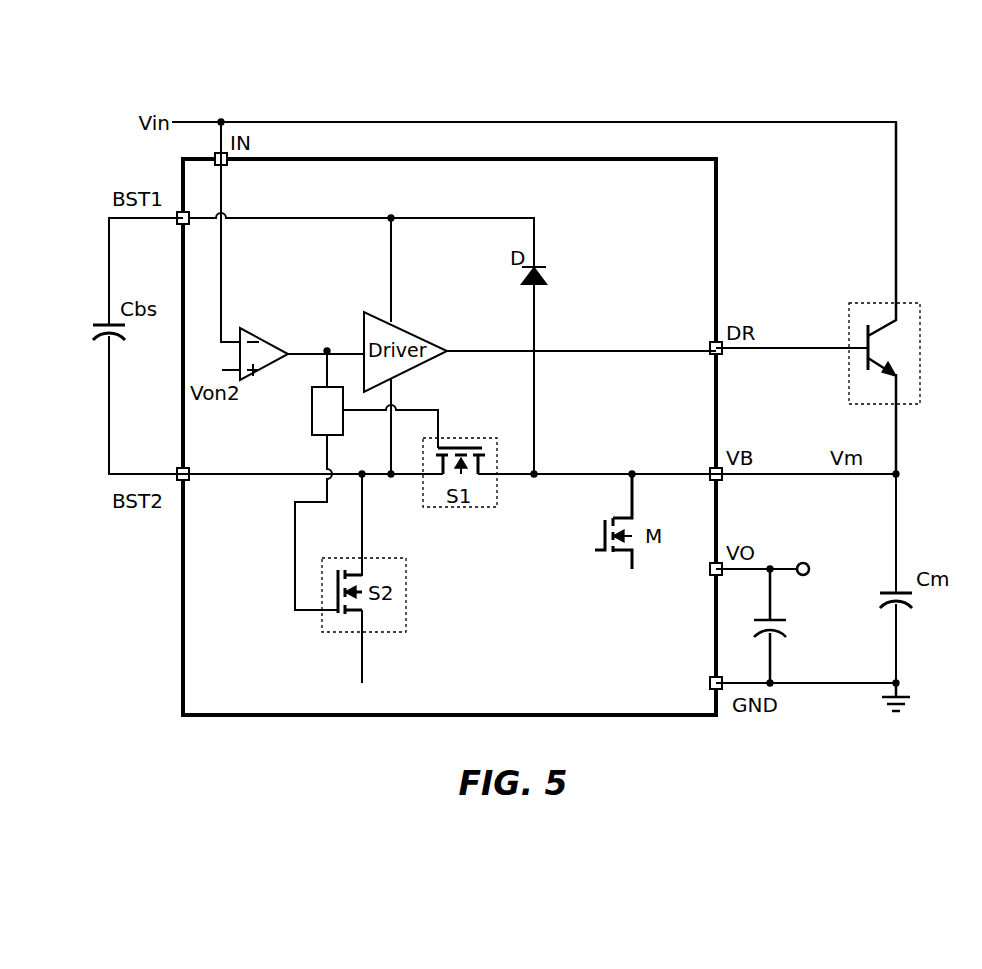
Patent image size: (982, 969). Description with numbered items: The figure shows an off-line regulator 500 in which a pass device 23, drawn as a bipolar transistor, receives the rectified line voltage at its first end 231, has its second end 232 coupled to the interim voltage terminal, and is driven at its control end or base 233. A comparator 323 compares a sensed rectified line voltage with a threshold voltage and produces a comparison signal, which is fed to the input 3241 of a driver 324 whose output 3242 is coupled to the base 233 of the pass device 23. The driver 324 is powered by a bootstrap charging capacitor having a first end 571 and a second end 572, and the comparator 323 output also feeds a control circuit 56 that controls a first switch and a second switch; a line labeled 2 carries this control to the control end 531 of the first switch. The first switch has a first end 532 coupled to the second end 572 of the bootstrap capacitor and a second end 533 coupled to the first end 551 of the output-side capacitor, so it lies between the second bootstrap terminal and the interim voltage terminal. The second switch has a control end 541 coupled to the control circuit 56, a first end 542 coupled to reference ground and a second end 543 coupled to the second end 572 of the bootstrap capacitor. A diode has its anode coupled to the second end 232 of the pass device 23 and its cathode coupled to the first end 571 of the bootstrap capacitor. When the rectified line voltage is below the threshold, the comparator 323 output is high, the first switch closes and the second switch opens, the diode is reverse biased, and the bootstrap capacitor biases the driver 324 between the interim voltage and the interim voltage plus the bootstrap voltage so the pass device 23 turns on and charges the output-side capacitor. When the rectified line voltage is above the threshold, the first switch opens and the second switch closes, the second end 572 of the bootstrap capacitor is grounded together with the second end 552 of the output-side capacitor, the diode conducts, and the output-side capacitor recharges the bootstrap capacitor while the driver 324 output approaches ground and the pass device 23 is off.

The off-line regulator 500 is at (930, 114).
The pass device 23 is at (845, 298).
The collector 231 is at (898, 300).
The second end of pass device 232 is at (900, 406).
The control end of pass device 233 is at (850, 356).
The comparator 323 is at (258, 328).
The driver 324 is at (372, 308).
The input of driver 3241 is at (363, 352).
The output of driver 3242 is at (447, 350).
The control circuit 56 is at (312, 410).
The control signal node 2 is at (438, 401).
The gate of switch S1 531 is at (440, 444).
The first end of first switch 532 is at (424, 476).
The second end of first switch 533 is at (496, 476).
The control end of second switch 541 is at (322, 612).
The first end of second switch 542 is at (364, 632).
The second end of second switch 543 is at (362, 562).
The first end of capacitor Cm 551 is at (894, 592).
The second end of capacitor Cm 552 is at (890, 604).
The first end of capacitor Cbs 571 is at (104, 322).
The second end of capacitor Cbs 572 is at (104, 340).